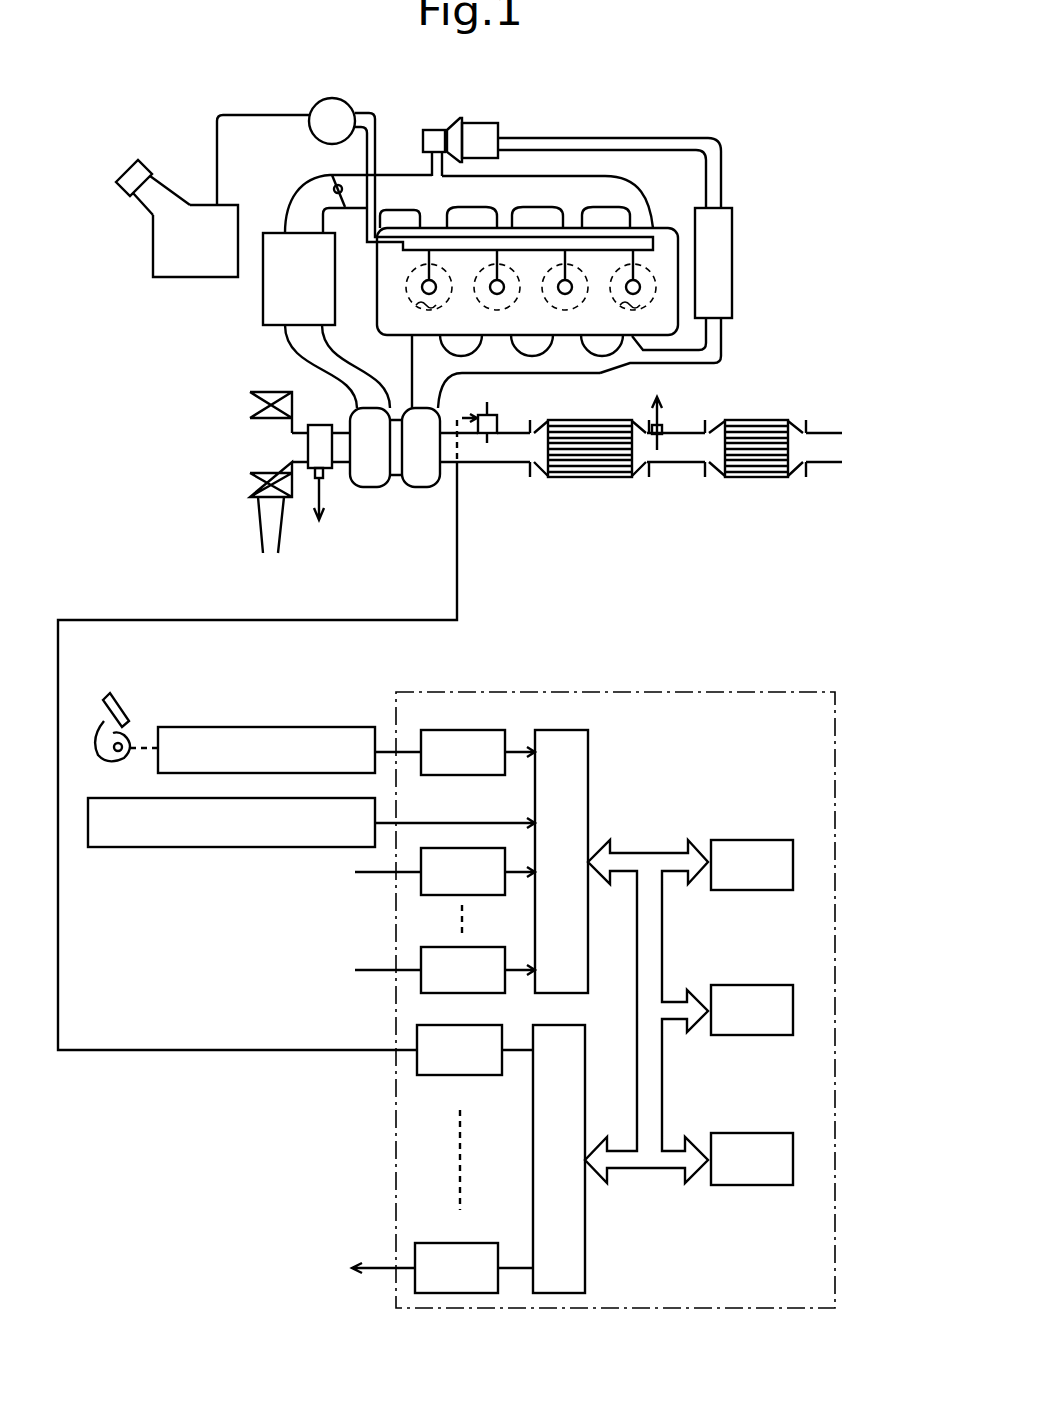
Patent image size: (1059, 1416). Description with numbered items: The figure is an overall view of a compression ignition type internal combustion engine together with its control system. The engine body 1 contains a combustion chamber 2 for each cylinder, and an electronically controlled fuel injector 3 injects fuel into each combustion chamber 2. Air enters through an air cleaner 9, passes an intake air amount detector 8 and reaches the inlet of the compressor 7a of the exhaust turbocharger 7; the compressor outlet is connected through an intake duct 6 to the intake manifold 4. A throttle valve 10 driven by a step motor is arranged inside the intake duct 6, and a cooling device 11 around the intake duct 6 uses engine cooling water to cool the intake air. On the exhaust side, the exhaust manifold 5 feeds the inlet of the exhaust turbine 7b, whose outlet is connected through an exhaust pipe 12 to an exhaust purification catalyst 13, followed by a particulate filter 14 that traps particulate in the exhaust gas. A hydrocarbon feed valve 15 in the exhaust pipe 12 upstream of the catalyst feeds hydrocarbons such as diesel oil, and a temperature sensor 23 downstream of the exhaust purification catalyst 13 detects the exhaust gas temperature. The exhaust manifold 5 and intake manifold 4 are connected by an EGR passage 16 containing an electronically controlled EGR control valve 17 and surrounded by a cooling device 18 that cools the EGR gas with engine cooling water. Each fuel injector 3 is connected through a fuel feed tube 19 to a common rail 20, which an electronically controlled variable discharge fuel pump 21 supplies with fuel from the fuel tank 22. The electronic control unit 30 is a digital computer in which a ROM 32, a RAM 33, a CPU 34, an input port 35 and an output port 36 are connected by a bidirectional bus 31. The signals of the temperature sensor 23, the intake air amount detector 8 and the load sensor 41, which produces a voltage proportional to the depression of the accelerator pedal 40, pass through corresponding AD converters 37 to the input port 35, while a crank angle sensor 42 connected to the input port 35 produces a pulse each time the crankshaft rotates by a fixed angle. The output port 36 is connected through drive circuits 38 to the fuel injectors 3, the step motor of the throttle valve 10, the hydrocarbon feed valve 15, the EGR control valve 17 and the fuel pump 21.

The engine body 1 is at (684, 222).
The combustion chamber 2 is at (421, 312).
The electronically controlled fuel injector 3 is at (423, 287).
The intake manifold 4 is at (617, 185).
The exhaust manifold 5 is at (526, 364).
The intake duct 6 is at (298, 208).
The exhaust turbocharger 7 is at (391, 499).
The compressor 7a is at (368, 482).
The exhaust turbine 7b is at (428, 482).
The intake air amount detector 8 is at (312, 467).
The air cleaner 9 is at (252, 447).
The throttle valve 10 is at (333, 178).
The cooling device 11 is at (266, 306).
The exhaust pipe 12 is at (492, 465).
The exhaust purification catalyst 13 is at (590, 478).
The particulate filter 14 is at (758, 478).
The hydrocarbon feed valve 15 is at (490, 412).
The EGR passage 16 is at (588, 138).
The EGR control valve 17 is at (430, 130).
The cooling device 18 is at (732, 260).
The fuel feed tube 19 is at (426, 272).
The common rail 20 is at (536, 243).
The electronically controlled variable discharge fuel pump 21 is at (318, 104).
The fuel tank 22 is at (173, 272).
The temperature sensor 23 is at (652, 424).
The electronic control unit 30 is at (814, 688).
The bidirectional bus 31 is at (647, 852).
The ROM 32 is at (760, 840).
The RAM 33 is at (760, 985).
The CPU 34 is at (760, 1133).
The input port 35 is at (590, 745).
The output port 36 is at (588, 1250).
The AD converter 37 is at (470, 730).
The drive circuit 38 is at (418, 1060).
The accelerator pedal 40 is at (112, 707).
The load sensor 41 is at (299, 727).
The crank angle sensor 42 is at (215, 848).